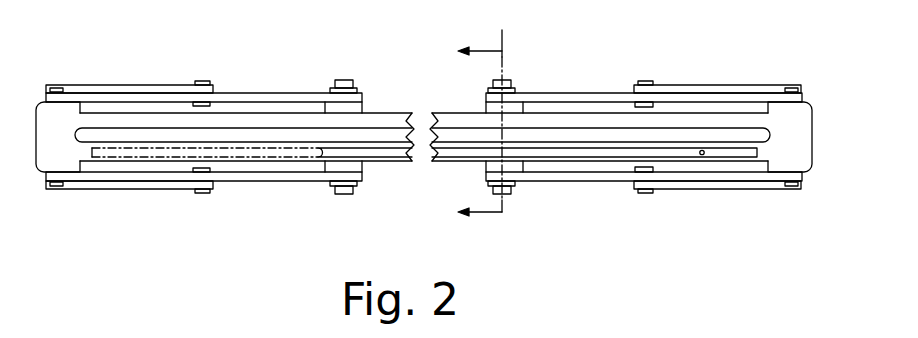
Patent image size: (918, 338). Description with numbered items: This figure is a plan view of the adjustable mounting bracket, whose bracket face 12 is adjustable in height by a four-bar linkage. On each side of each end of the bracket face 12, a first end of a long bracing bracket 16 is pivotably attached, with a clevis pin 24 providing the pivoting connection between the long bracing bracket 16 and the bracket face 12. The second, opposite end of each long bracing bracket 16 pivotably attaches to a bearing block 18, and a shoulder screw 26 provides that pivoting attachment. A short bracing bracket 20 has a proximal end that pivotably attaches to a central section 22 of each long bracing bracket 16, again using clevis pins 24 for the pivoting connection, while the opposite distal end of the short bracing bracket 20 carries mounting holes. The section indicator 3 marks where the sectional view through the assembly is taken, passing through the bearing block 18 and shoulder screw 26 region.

The bracket face 12 is at (385, 112).
The long bracing bracket 16 is at (575, 181).
The bearing block 18 is at (362, 172).
The short bracing bracket 20 is at (733, 189).
The central section 22 is at (636, 172).
The clevis pin 24 is at (791, 192).
The shoulder screw 26 is at (505, 194).
The section line 3- 3 is at (470, 129).